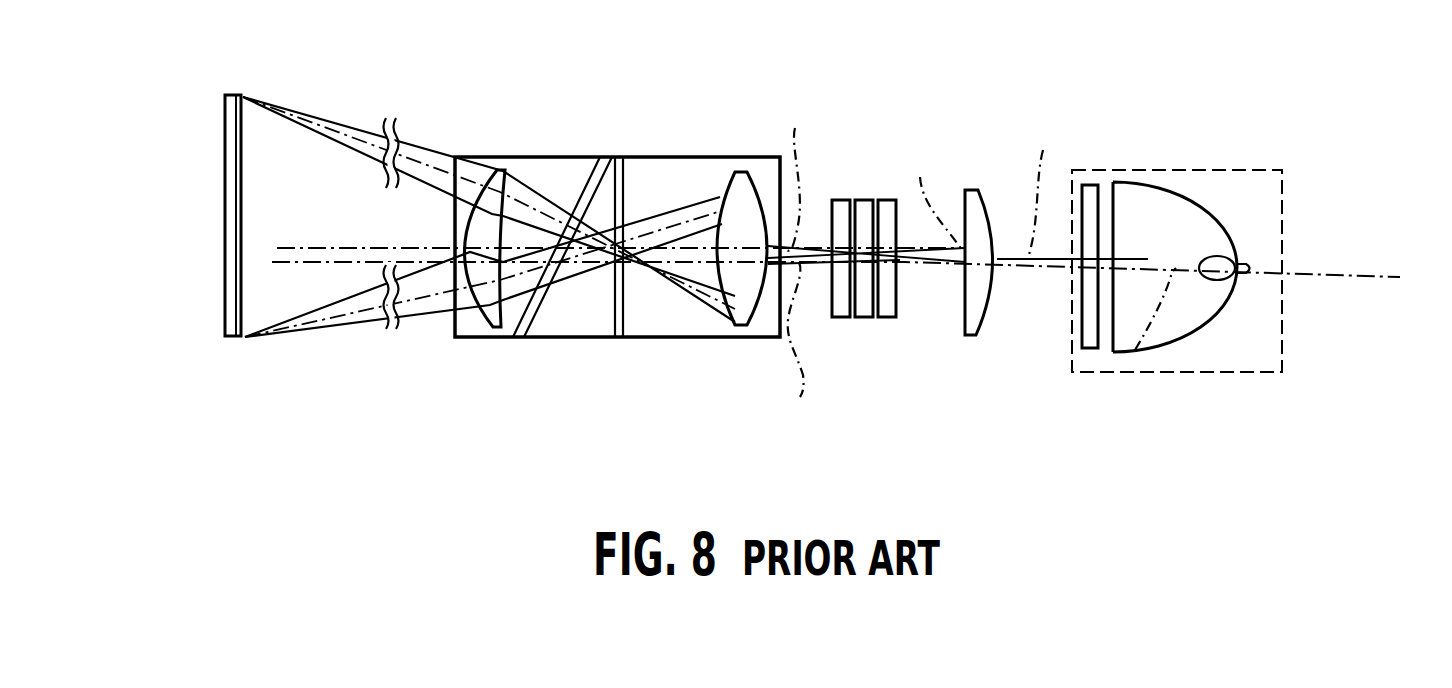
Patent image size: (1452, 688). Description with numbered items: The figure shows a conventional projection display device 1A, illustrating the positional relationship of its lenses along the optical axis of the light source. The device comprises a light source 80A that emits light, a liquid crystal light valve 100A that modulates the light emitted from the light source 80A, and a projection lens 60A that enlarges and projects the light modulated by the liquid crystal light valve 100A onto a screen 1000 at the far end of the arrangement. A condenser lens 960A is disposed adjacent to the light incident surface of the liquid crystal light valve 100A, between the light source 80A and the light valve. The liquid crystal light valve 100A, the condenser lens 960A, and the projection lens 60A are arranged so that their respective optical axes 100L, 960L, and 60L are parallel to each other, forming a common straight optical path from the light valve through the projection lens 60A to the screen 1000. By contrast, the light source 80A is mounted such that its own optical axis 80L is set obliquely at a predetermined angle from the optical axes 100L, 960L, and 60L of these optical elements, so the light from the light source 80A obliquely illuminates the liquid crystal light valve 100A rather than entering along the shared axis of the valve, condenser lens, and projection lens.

The screen 1000 is at (225, 307).
The projection lens 60A is at (666, 157).
The optical axis of the projection lens 60L is at (824, 181).
The optical axis of the liquid crystal light valve 100L is at (768, 345).
The liquid crystal light valve 100A is at (902, 328).
The optical axis of the condenser lens 960L is at (917, 195).
The condenser lens 960A is at (977, 190).
The projection display device 1A is at (935, 104).
The light source 80A is at (1233, 170).
The optical axis of the light source 80L is at (1135, 350).